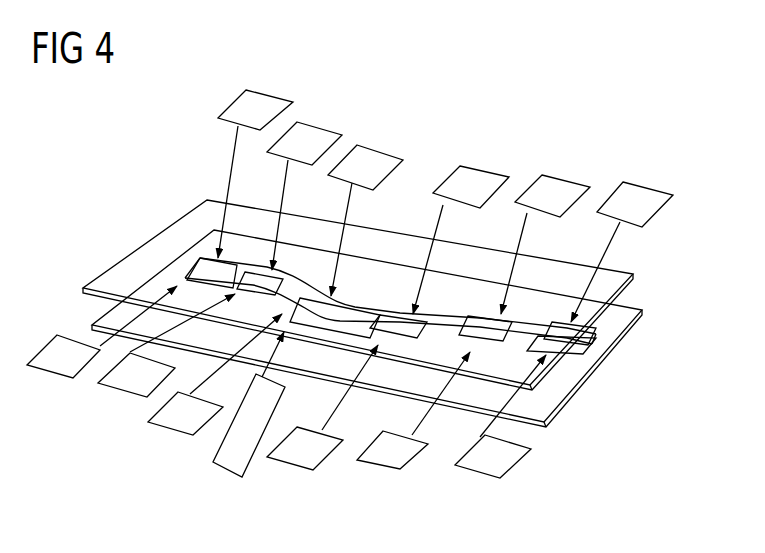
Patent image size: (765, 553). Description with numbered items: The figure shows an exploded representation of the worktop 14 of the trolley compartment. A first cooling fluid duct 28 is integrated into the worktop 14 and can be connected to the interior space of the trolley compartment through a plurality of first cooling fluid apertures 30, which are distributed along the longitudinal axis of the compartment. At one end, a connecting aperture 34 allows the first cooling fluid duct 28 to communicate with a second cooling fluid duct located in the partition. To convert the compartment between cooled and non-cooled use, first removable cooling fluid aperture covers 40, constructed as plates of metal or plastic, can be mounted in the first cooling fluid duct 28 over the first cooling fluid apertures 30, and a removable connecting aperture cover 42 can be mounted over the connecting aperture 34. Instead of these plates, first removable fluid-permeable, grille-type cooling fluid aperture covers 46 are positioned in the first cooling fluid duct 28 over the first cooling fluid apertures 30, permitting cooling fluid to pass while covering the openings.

The worktop 14 is at (662, 285).
The first cooling fluid duct 28 is at (593, 343).
The first cooling fluid apertures 30 is at (198, 272).
The connecting aperture 34 is at (340, 307).
The first removable cooling fluid aperture covers 40 is at (63, 365).
The removable connecting aperture cover 42 is at (233, 460).
The first removable fluid-permeable, grille-type cooling fluid aperture covers 46 is at (363, 158).